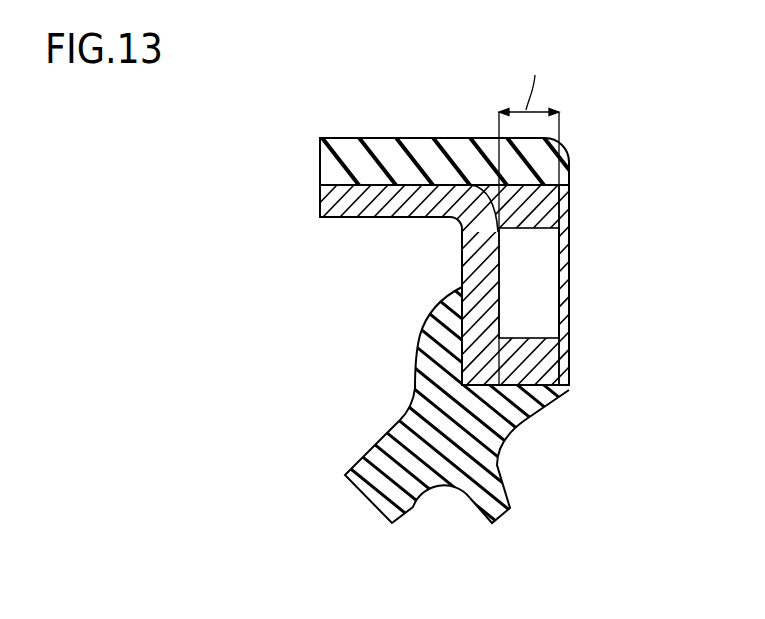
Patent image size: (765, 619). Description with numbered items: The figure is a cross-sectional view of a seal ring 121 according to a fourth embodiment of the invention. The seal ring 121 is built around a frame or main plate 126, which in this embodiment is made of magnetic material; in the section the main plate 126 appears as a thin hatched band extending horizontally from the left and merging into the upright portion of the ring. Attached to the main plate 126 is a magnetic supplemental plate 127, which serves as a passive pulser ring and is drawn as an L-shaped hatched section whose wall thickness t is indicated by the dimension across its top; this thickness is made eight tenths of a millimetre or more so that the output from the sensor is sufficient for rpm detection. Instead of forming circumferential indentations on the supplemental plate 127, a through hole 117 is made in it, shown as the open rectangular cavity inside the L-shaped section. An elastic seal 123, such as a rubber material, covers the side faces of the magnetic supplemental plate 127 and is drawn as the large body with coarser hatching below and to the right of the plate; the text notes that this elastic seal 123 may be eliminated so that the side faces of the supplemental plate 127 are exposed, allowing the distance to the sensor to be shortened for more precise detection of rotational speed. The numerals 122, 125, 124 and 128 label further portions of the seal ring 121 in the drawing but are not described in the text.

The seal ring 121 is at (571, 99).
The seal lip member 122 is at (318, 205).
The elastic seal portion 125 is at (358, 184).
The main plate 126 is at (384, 217).
The magnetic supplemental plate 127 is at (567, 206).
The through hole 117 is at (548, 267).
The inner surface of ring wall 124 is at (555, 322).
The elastic seal 123 is at (494, 470).
The flange portion 128 is at (372, 493).